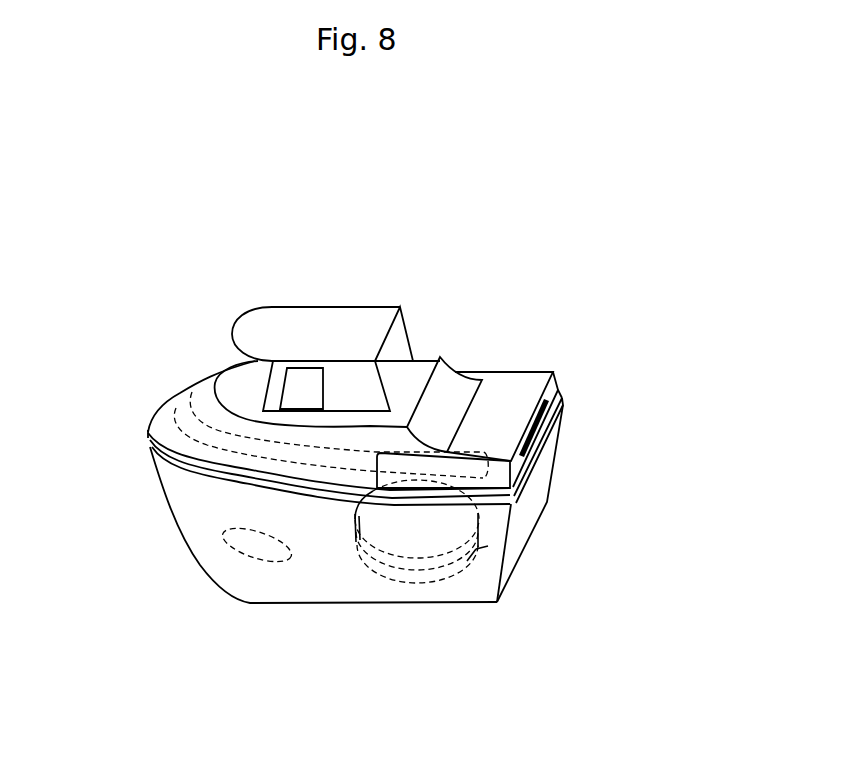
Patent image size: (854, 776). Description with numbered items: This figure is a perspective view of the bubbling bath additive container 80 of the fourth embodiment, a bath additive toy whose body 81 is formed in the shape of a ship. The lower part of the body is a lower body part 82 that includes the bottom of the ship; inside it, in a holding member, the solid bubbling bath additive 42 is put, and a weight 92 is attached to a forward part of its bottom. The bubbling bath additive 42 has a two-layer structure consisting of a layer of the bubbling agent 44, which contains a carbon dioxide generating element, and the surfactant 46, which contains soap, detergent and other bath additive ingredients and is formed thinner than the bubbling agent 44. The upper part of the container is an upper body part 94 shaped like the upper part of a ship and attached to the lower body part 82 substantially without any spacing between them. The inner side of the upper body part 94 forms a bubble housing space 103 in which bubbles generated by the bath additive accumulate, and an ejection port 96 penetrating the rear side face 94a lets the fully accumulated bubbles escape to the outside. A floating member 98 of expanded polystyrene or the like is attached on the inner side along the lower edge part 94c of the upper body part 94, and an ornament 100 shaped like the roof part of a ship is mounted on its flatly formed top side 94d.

The bubbling bath additive container 80 is at (512, 303).
The body 81 is at (110, 447).
The lower body part 82 is at (273, 587).
The ornament 100 is at (308, 323).
The bubble housing space 103 is at (207, 392).
The floating member 98 is at (176, 408).
The upper body part 94 is at (503, 388).
The rear side face 94a is at (555, 393).
The lower edge part 94c is at (196, 478).
The top side 94d is at (420, 373).
The ejection port 96 is at (535, 432).
The weight 92 is at (253, 544).
The bubbling bath additive 42 is at (480, 551).
The surfactant 46 is at (443, 538).
The bubbling agent 44 is at (440, 577).